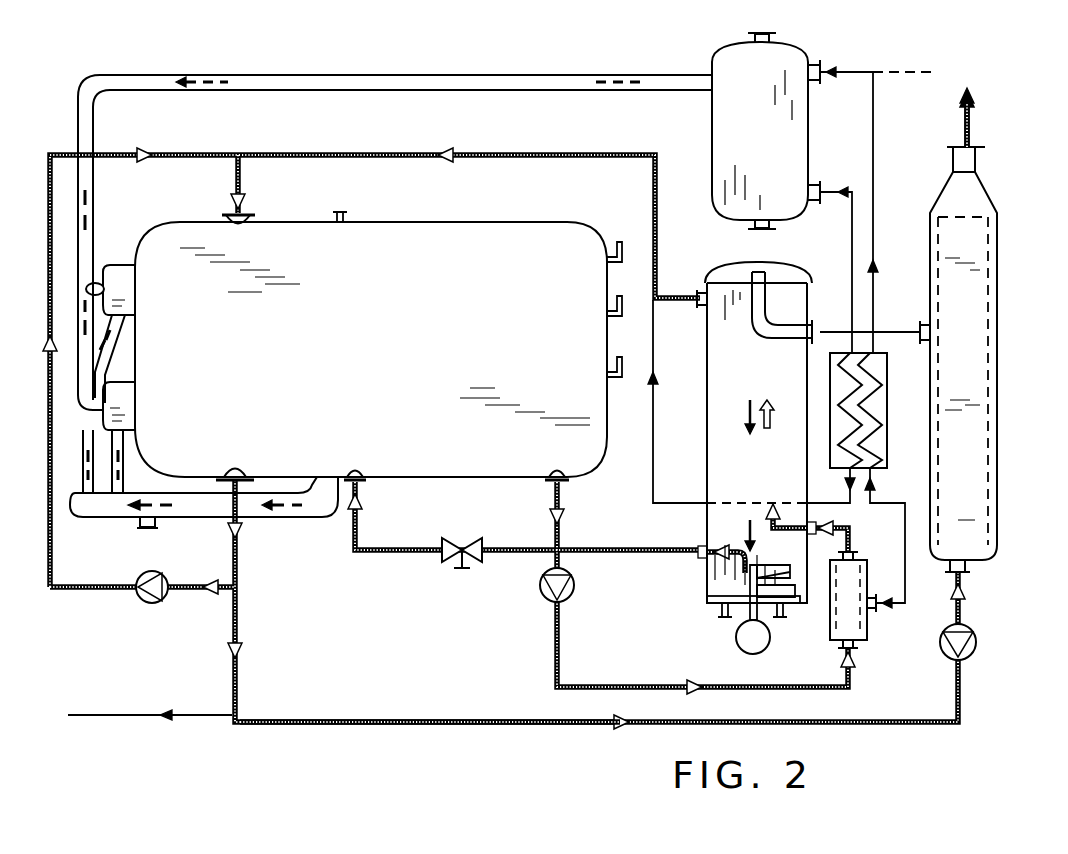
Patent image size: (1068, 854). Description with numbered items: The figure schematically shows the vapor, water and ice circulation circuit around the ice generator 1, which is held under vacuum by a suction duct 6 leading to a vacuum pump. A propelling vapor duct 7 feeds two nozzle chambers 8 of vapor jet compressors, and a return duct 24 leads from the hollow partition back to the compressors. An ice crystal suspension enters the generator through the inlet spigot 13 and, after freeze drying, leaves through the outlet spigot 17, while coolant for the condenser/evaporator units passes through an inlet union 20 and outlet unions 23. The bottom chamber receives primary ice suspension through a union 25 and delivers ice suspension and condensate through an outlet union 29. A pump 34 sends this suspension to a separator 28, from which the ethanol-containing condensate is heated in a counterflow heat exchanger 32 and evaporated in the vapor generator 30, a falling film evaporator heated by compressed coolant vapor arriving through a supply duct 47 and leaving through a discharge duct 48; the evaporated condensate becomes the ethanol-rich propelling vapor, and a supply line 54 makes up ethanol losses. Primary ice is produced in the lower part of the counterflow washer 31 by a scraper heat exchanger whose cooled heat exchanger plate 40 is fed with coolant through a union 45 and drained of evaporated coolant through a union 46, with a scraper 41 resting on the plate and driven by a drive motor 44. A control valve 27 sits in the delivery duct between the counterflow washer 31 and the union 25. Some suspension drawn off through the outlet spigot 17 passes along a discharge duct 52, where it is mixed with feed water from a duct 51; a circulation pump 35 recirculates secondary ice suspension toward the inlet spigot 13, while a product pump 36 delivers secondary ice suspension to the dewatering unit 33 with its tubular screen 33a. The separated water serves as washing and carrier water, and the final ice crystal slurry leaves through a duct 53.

The ice generator 1 is at (428, 368).
The suction duct 6 is at (140, 528).
The propelling vapor duct 7 is at (372, 82).
The nozzle chamber 8 is at (121, 280).
The inlet spigot 13 is at (254, 216).
The outlet spigot 17 is at (246, 470).
The inlet union 20 is at (348, 212).
The outlet union 23 is at (612, 240).
The return duct 24 is at (290, 520).
The union 25 is at (366, 484).
The control valve 27 is at (448, 553).
The separator 28 is at (870, 641).
The outlet union 29 is at (570, 484).
The vapor generator 30 is at (776, 153).
The counterflow washer 31 is at (770, 380).
The counterflow heat exchanger 32 is at (885, 428).
The dewatering unit 33 is at (995, 205).
The tubular screen 33a is at (988, 355).
The pump 34 is at (545, 588).
The circulation pump 35 is at (148, 600).
The product pump 36 is at (978, 636).
The heat exchanger plate 40 is at (712, 598).
The scraper 41 is at (789, 559).
The drive motor 44 is at (736, 645).
The union 45 is at (718, 613).
The union 46 is at (788, 608).
The supply duct 47 is at (750, 41).
The discharge duct 48 is at (770, 229).
The duct 51 is at (186, 714).
The discharge duct 52 is at (390, 718).
The duct 53 is at (975, 128).
The supply line 54 is at (898, 78).